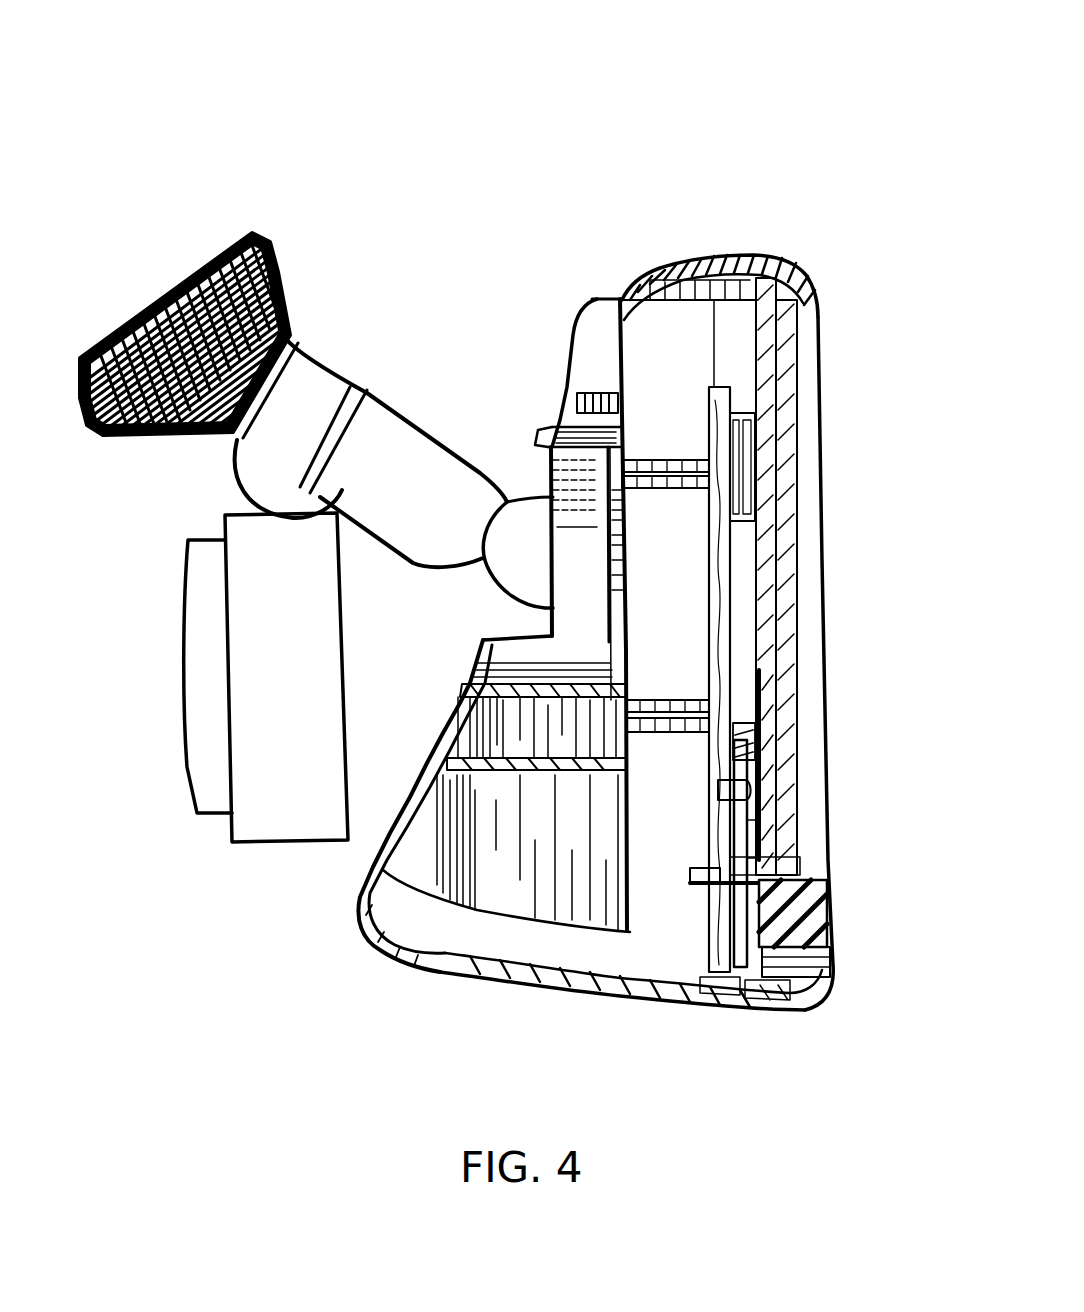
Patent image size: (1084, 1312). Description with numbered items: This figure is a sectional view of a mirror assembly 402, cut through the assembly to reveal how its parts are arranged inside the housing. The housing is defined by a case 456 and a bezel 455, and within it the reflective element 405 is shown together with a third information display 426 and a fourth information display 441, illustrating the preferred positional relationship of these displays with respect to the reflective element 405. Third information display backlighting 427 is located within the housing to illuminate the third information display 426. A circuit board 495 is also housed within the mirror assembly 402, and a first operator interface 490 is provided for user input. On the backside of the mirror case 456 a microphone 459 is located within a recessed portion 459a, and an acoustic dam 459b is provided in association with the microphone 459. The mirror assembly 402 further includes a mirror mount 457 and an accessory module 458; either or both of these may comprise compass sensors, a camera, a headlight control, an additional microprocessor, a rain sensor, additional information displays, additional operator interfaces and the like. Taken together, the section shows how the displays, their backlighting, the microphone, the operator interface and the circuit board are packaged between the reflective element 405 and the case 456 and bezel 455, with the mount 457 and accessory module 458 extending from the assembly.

The mirror assembly 402 is at (242, 165).
The mirror mount 457 is at (253, 303).
The accessory module 458 is at (300, 673).
The microphone 459 is at (576, 364).
The recessed portion 459a is at (593, 340).
The acoustic dam 459b is at (543, 420).
The bezel 455 is at (797, 263).
The fourth information display 441 is at (797, 457).
The reflective element 405 is at (796, 565).
The circuit board 495 is at (708, 528).
The third information display backlighting 427 is at (799, 735).
The third information display 426 is at (805, 783).
The first operator interface 490 is at (833, 910).
The case 456 is at (362, 920).